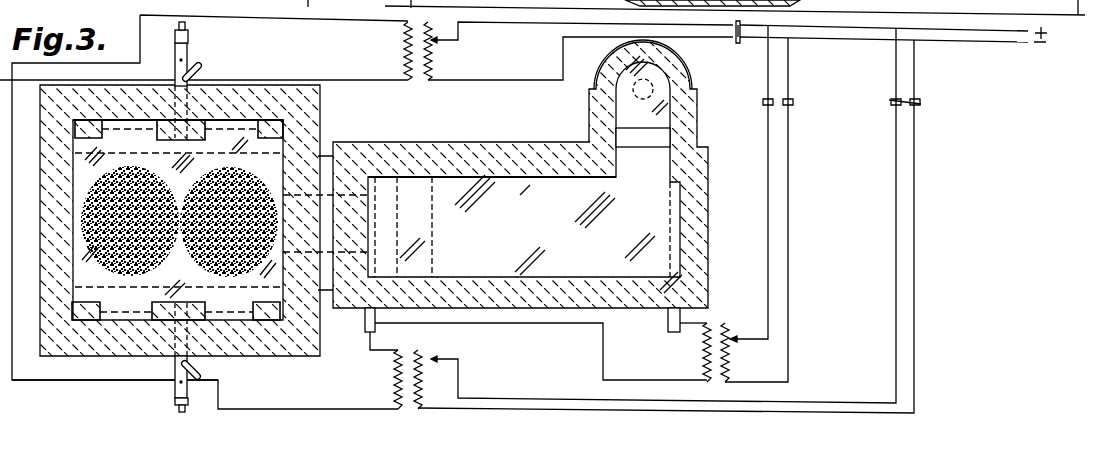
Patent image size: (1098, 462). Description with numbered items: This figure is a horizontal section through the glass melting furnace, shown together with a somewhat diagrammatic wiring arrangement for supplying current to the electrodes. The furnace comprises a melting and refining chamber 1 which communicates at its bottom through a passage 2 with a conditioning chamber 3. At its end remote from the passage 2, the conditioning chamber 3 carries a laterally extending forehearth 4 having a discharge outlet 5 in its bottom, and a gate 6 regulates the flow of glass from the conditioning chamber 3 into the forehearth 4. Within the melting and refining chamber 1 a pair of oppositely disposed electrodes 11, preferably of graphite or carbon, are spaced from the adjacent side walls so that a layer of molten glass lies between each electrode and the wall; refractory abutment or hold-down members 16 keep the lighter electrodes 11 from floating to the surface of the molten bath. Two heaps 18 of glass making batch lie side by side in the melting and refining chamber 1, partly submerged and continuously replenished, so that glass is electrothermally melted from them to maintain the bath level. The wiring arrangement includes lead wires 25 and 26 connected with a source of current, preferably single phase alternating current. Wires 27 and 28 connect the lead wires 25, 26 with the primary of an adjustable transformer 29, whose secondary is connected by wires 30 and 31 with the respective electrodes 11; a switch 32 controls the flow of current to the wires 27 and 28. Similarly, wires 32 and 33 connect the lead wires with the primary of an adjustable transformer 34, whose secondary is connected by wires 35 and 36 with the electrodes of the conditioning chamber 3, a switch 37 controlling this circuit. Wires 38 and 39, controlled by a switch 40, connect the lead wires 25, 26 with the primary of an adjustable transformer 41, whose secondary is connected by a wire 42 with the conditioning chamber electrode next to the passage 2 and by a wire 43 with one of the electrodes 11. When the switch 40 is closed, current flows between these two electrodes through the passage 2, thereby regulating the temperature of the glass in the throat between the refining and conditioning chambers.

The melting and refining chamber 1 is at (76, 160).
The passage 2 is at (362, 150).
The conditioning chamber 3 is at (530, 178).
The forehearth 4 is at (672, 116).
The discharge outlet 5 is at (676, 78).
The gate 6 is at (660, 140).
The electrodes 11 is at (247, 102).
The refractory abutment or hold-down members 16 is at (163, 128).
The heaps 18 is at (206, 258).
The lead wire 25 is at (957, 31).
The lead wire 26 is at (985, 43).
The wire 27 is at (498, 26).
The wire 28 is at (518, 82).
The adjustable transformer 29 is at (415, 83).
The wire 30 is at (342, 21).
The wire 31 is at (343, 80).
The switch 32 is at (740, 44).
The wire 33 is at (790, 238).
The adjustable transformer 34 is at (715, 322).
The wire 35 is at (690, 334).
The wire 36 is at (603, 356).
The switch 37 is at (796, 103).
The wire 38 is at (896, 182).
The wire 39 is at (914, 208).
The switch 40 is at (916, 106).
The adjustable transformer 41 is at (436, 354).
The wire 42 is at (370, 352).
The wire 43 is at (280, 408).